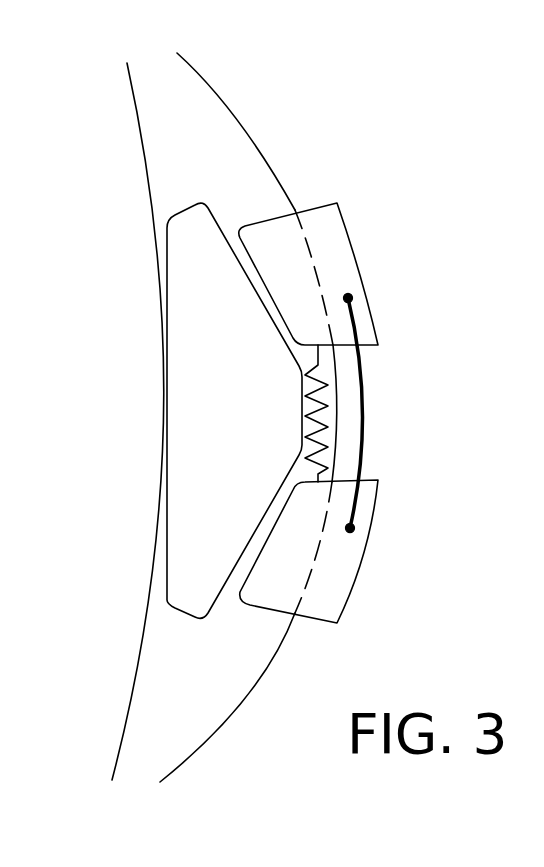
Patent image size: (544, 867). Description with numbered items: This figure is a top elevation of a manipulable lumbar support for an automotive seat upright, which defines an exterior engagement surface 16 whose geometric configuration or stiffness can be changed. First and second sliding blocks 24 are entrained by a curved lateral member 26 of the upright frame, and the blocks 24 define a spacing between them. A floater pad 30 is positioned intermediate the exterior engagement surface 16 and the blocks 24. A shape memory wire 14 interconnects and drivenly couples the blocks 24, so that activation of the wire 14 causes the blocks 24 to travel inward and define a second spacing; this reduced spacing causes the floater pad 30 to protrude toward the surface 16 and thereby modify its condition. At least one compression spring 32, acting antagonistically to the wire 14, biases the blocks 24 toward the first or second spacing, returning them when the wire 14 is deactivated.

The wire 14 is at (362, 458).
The exterior engagement surface 16 is at (152, 200).
The sliding blocks 24 is at (377, 335).
The lateral member 26 is at (288, 195).
The floater pad 30 is at (167, 365).
The compression spring 32 is at (302, 455).